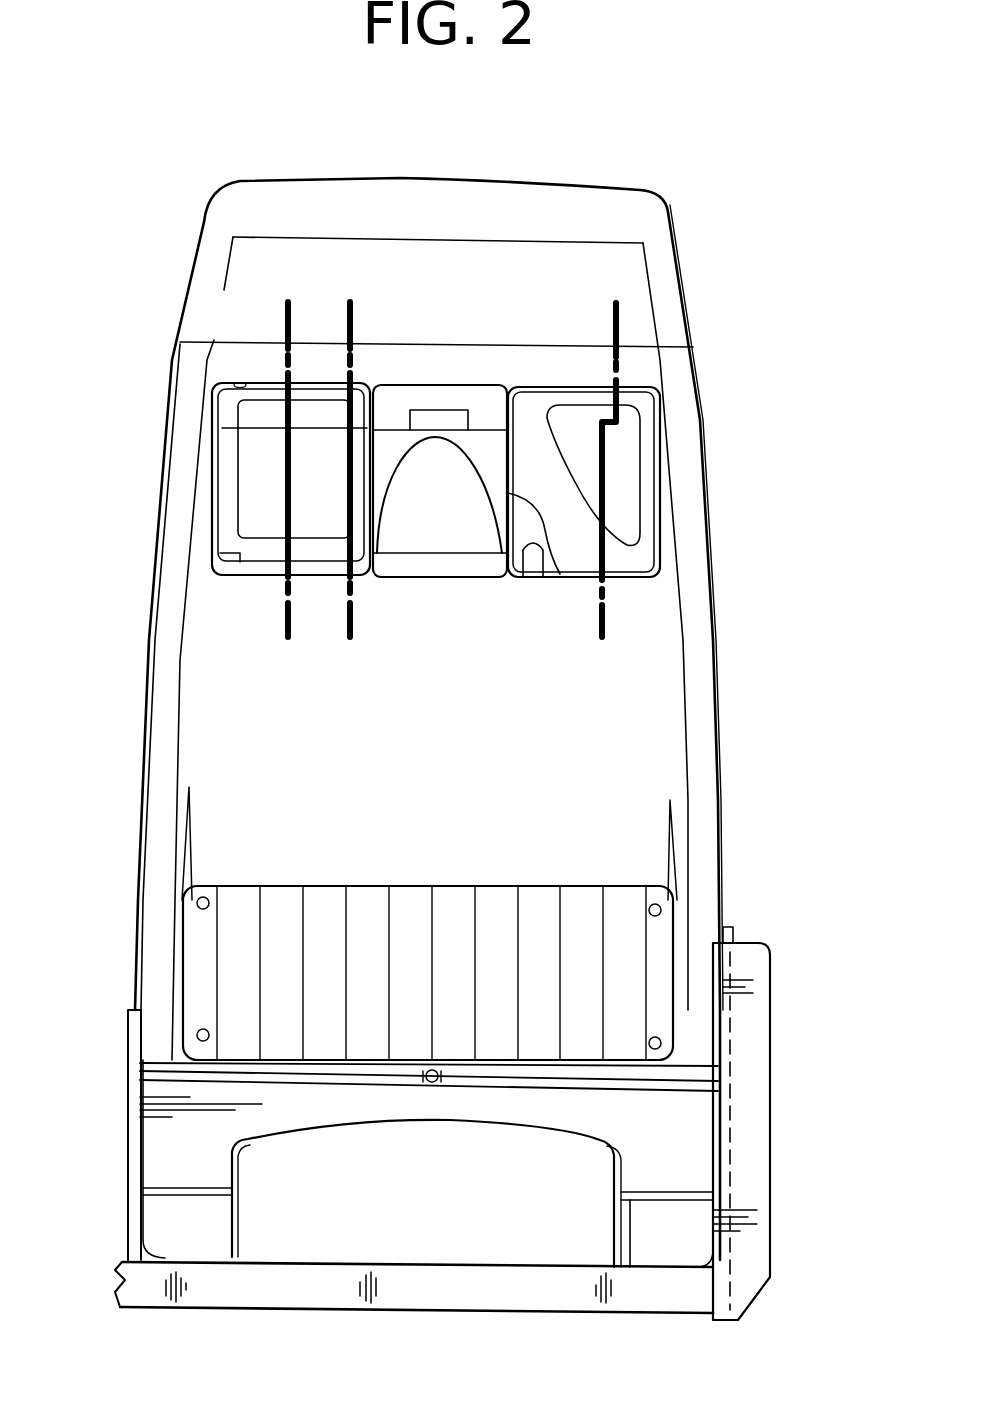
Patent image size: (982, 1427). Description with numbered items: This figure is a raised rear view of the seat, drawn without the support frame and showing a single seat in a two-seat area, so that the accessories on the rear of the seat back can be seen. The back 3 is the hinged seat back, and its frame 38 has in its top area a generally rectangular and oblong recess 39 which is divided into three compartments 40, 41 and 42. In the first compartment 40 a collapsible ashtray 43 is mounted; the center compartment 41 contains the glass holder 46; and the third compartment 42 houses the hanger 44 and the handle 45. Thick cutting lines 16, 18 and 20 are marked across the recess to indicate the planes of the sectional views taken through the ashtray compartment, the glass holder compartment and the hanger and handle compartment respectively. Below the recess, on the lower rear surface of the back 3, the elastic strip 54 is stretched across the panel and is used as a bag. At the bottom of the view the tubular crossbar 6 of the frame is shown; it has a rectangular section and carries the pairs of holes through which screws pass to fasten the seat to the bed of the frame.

The back 3 is at (196, 216).
The crossbar 6 is at (480, 1280).
The section line 16 is at (273, 317).
The section line 18 is at (327, 317).
The section line 20 is at (602, 323).
The frame 38 is at (667, 725).
The recess 39 is at (234, 386).
The compartment 40 is at (227, 460).
The center compartment 41 is at (405, 395).
The compartment 42 is at (630, 404).
The collapsible ashtray 43 is at (253, 517).
The hanger 44 is at (531, 560).
The handle 45 is at (532, 490).
The glass holder 46 is at (445, 418).
The elastic strip 54 is at (583, 910).